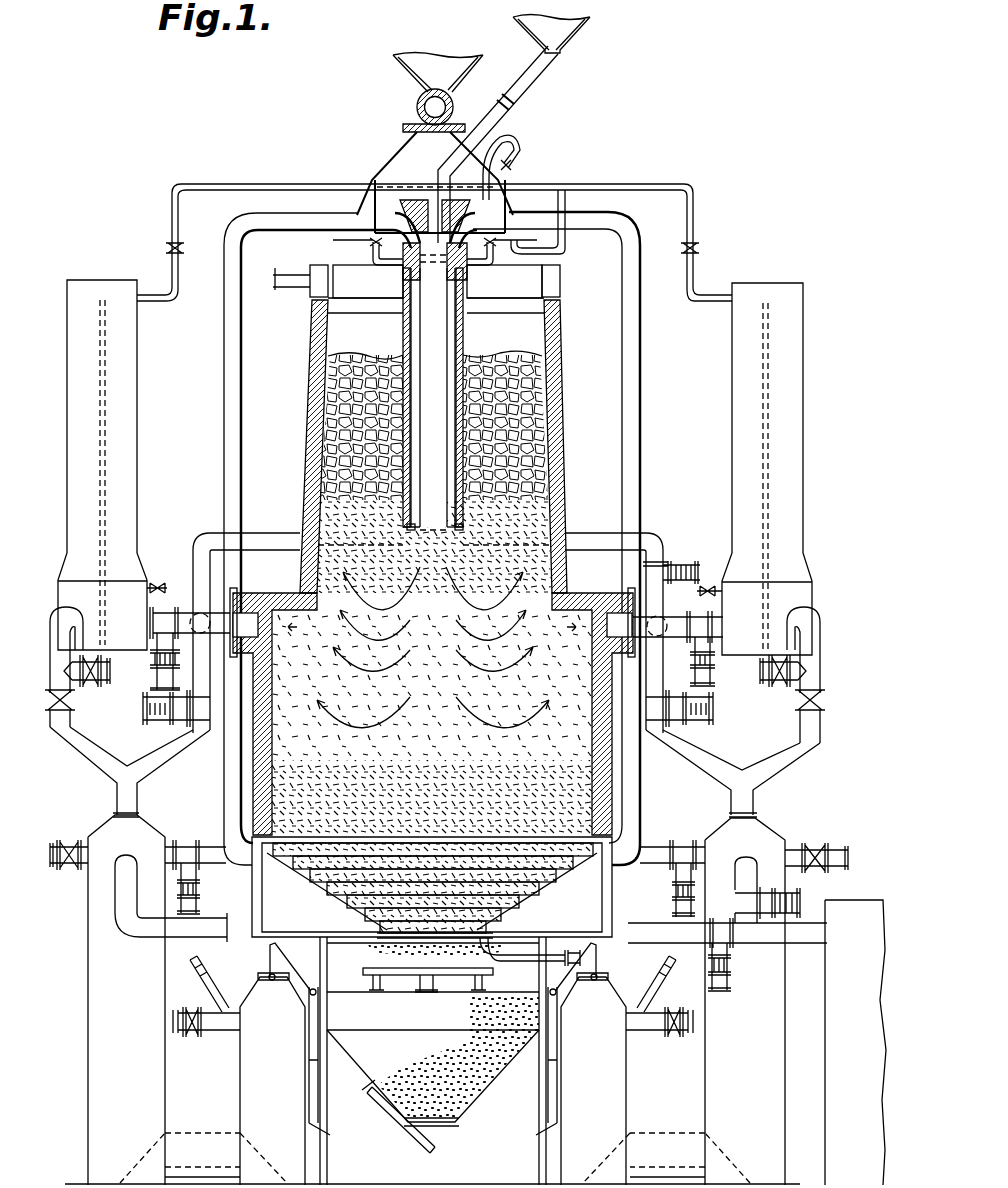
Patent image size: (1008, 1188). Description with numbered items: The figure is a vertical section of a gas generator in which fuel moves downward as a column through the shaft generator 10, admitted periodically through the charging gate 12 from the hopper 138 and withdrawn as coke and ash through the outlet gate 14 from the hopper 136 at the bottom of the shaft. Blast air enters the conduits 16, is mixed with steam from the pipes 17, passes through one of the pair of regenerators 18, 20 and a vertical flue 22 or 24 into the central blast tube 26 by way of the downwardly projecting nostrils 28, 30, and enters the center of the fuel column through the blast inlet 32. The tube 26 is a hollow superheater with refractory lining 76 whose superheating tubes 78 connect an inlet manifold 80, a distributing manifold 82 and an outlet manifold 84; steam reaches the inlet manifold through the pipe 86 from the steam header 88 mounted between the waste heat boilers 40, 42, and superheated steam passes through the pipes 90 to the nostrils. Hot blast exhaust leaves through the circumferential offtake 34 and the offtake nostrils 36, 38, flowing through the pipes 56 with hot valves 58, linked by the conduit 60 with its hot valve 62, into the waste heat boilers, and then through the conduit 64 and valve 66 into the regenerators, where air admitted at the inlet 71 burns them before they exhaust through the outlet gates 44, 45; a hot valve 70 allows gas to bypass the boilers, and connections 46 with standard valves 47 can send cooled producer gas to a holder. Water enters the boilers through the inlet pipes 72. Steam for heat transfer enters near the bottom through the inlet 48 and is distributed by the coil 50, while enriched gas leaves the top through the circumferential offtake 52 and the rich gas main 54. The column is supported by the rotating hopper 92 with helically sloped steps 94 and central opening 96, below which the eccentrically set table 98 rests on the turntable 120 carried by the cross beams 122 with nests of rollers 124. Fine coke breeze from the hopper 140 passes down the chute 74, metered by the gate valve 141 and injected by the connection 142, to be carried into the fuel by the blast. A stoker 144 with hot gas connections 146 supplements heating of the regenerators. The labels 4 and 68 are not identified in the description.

The retort wall 4 is at (345, 318).
The shaft generator 10 is at (562, 388).
The charging gate 12 is at (451, 109).
The outlet gate 14 is at (440, 1130).
The air conduit 16 is at (215, 1032).
The steam pipe 17 is at (435, 996).
The regenerator 18 is at (786, 1030).
The regenerator 20 is at (88, 990).
The vertical flue 22 is at (642, 345).
The vertical flue 24 is at (224, 300).
The central blast tube 26 is at (403, 330).
The blast nostril 28 is at (502, 215).
The blast nostril 30 is at (431, 190).
The blast inlet 32 is at (435, 550).
The circumferential offtake 34 is at (290, 595).
The offtake nostril 36 is at (660, 620).
The offtake nostril 38 is at (200, 540).
The waste heat boiler 40 is at (804, 515).
The waste heat boiler 42 is at (138, 472).
The outlet gate 44 is at (600, 962).
The outlet gate 45 is at (268, 960).
The connection 46 is at (435, 682).
The standard valve 47 is at (433, 681).
The inlet 48 is at (560, 945).
The coil 50 is at (505, 957).
The circumferential offtake 52 is at (322, 290).
The rich gas main 54 is at (278, 274).
The pipe 56 is at (172, 610).
The hot valve 58 is at (162, 660).
The conduit 60 is at (250, 530).
The hot valve 62 is at (660, 558).
The conduit 64 is at (62, 615).
The valve 66 is at (75, 710).
The funnel 68 is at (155, 770).
The hot valve 70 is at (178, 718).
The air inlet 71 is at (62, 842).
The water inlet pipe 72 is at (158, 583).
The chute 74 is at (541, 80).
The refractory lining 76 is at (463, 322).
The superheating tube 78 is at (462, 340).
The inlet manifold 80 is at (504, 281).
The distributing manifold 82 is at (412, 524).
The outlet manifold 84 is at (368, 281).
The pipe 86 is at (566, 252).
The steam header 88 is at (172, 205).
The pipe 90 is at (435, 257).
The hopper 92 is at (432, 887).
The helically sloped steps 94 is at (350, 895).
The central opening 96 is at (575, 895).
The table 98 is at (365, 970).
The turntable bearing 120 is at (426, 992).
The cross beams 122 is at (340, 995).
The nests of rollers 124 is at (378, 990).
The hopper 136 is at (487, 1085).
The hopper 138 is at (403, 70).
The hopper 140 is at (572, 32).
The gate valve 141 is at (514, 106).
The connection 142 is at (520, 146).
The stoker 144 is at (830, 1115).
The hot gas connection 146 is at (150, 937).